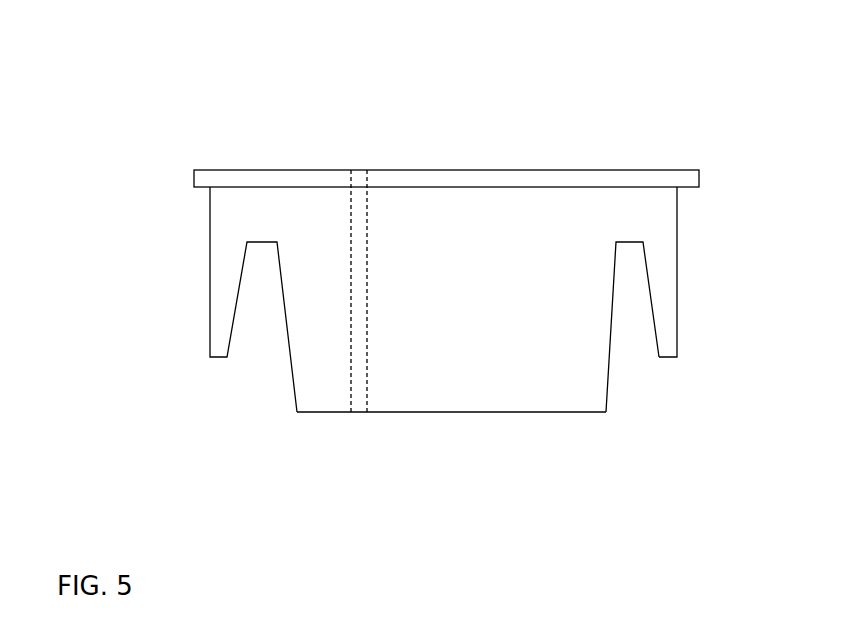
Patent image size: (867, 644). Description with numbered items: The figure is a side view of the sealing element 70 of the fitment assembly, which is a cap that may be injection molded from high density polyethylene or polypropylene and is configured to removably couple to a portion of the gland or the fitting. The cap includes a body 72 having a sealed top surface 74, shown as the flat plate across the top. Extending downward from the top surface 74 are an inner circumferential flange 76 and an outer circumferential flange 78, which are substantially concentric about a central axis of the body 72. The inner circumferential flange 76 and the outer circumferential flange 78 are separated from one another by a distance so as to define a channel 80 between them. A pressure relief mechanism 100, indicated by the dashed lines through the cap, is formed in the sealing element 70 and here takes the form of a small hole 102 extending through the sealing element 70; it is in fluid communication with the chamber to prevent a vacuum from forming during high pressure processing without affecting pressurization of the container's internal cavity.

The sealing element 70 is at (135, 167).
The body 72 is at (452, 313).
The sealed top surface 74 is at (486, 171).
The inner circumferential flange 76 is at (613, 368).
The outer circumferential flange 78 is at (680, 282).
The channel 80 is at (629, 318).
The pressure relief mechanism 100 is at (340, 194).
The hole 102 is at (360, 257).